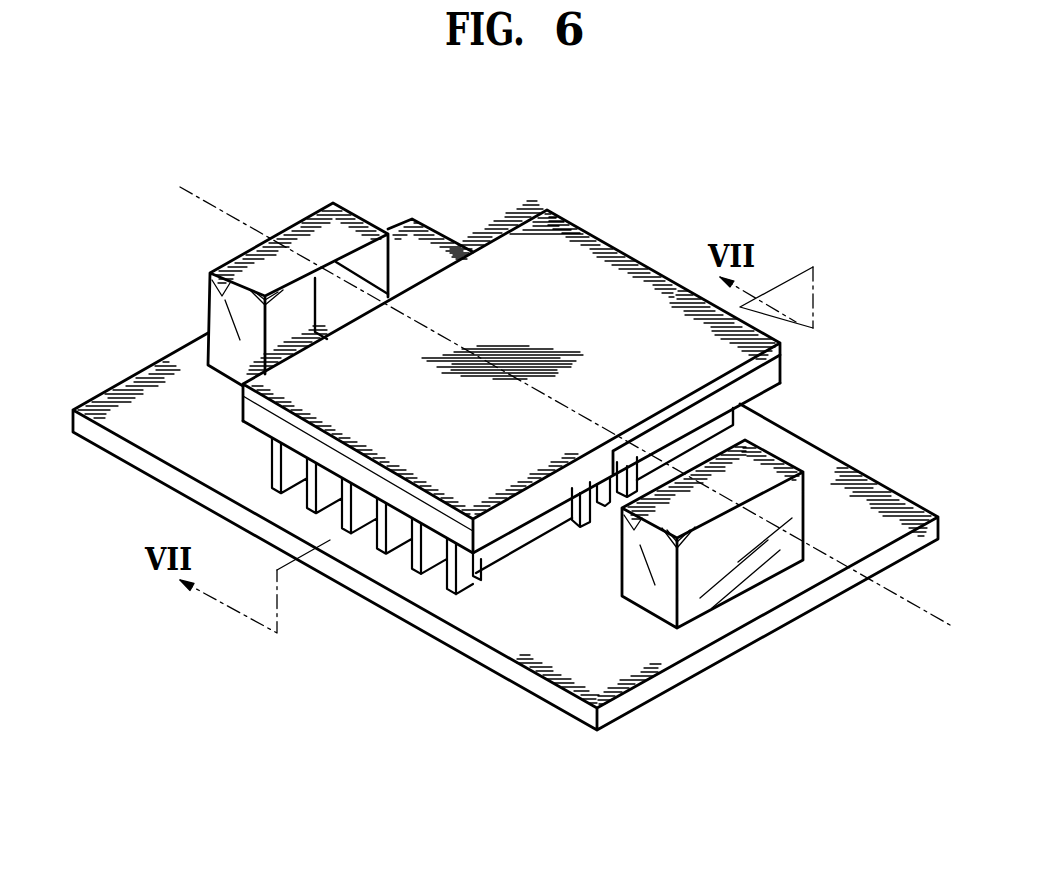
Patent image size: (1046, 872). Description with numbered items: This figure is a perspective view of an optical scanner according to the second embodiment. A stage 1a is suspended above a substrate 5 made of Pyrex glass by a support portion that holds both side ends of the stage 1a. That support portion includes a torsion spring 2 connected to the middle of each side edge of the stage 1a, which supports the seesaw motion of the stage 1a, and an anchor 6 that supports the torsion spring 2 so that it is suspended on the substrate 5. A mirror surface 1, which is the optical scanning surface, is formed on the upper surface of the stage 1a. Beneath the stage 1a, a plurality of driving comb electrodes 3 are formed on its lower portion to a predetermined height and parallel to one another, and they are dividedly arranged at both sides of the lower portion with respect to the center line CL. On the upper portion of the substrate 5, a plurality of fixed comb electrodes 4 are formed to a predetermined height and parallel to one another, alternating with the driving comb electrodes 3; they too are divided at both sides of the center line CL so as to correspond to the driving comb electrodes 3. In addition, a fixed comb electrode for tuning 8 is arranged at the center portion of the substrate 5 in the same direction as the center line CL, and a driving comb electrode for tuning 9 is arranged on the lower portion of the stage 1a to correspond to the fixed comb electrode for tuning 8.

The mirror surface 1 is at (620, 272).
The stage 1a is at (770, 375).
The torsion spring 2 is at (393, 267).
The driving comb electrodes 3 is at (473, 574).
The fixed comb electrodes 4 is at (449, 592).
The substrate 5 is at (107, 442).
The anchor 6 is at (349, 227).
The fixed comb electrode for tuning 8 is at (572, 522).
The driving comb electrode for tuning 9 is at (605, 484).
The center line CL is at (236, 222).